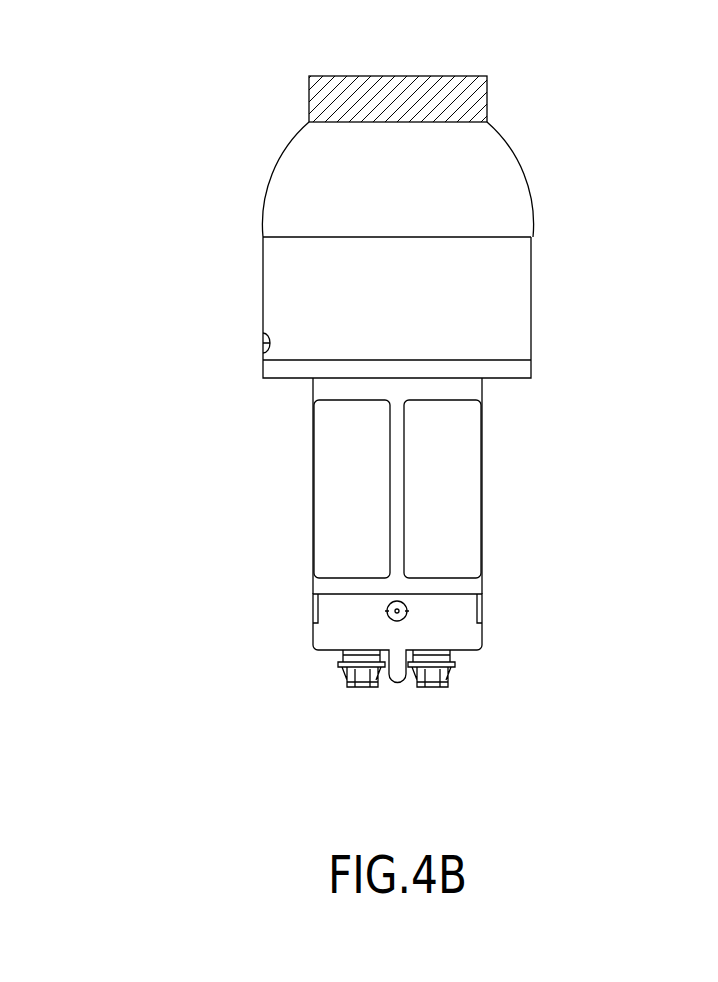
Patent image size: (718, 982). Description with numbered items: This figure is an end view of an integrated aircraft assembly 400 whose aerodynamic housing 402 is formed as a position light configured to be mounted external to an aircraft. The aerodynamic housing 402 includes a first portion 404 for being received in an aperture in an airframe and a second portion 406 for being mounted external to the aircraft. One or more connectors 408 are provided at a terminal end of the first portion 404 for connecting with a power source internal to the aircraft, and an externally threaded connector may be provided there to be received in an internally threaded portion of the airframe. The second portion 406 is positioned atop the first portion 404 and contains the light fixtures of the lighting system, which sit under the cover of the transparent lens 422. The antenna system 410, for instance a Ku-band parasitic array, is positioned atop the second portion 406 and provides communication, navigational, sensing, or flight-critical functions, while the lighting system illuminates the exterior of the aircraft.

The integrated assembly 400 is at (130, 68).
The aerodynamic housing 402 is at (389, 559).
The first portion 404 is at (487, 513).
The second portion 406 is at (535, 384).
The connectors 408 is at (433, 684).
The antenna system 410 is at (355, 73).
The transparent lens 422 is at (497, 188).